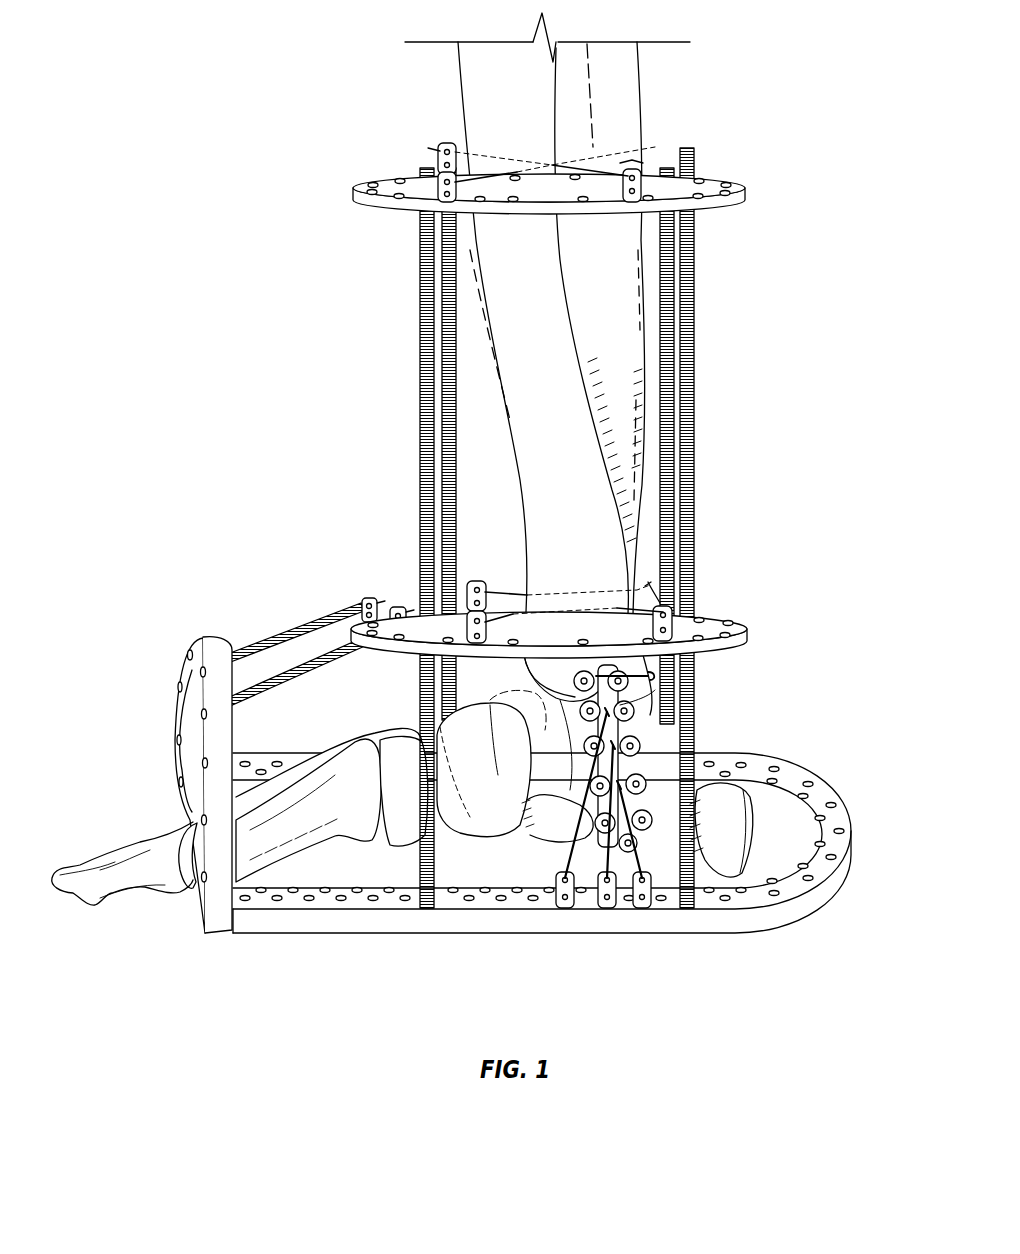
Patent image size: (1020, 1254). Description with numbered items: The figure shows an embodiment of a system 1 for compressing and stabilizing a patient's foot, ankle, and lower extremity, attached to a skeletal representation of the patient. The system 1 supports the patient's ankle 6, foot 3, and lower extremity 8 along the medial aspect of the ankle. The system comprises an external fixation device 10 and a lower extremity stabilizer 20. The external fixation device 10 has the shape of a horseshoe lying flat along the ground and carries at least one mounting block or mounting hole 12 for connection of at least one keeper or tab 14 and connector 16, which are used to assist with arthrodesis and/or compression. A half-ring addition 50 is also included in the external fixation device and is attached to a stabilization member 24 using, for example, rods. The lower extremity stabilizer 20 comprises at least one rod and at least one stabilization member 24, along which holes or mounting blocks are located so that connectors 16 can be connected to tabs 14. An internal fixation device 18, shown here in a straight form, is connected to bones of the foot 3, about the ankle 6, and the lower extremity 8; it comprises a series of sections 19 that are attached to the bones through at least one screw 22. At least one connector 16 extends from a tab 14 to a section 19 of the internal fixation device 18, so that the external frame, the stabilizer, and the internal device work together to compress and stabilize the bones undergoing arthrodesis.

The system 1 is at (206, 374).
The foot 3 is at (378, 752).
The ankle 6 is at (546, 732).
The lower extremity 8 is at (535, 470).
The external fixation device 10 is at (839, 815).
The mounting block or mounting hole 12 is at (803, 777).
The keeper or tab 14 is at (478, 583).
The connector 16 is at (507, 586).
The internal fixation device 18 is at (650, 722).
The section 19 is at (680, 735).
The lower extremity stabilizer 20 is at (330, 346).
The screw 22 is at (534, 703).
The stabilization member 24 is at (353, 192).
The half-ring addition 50 is at (194, 652).